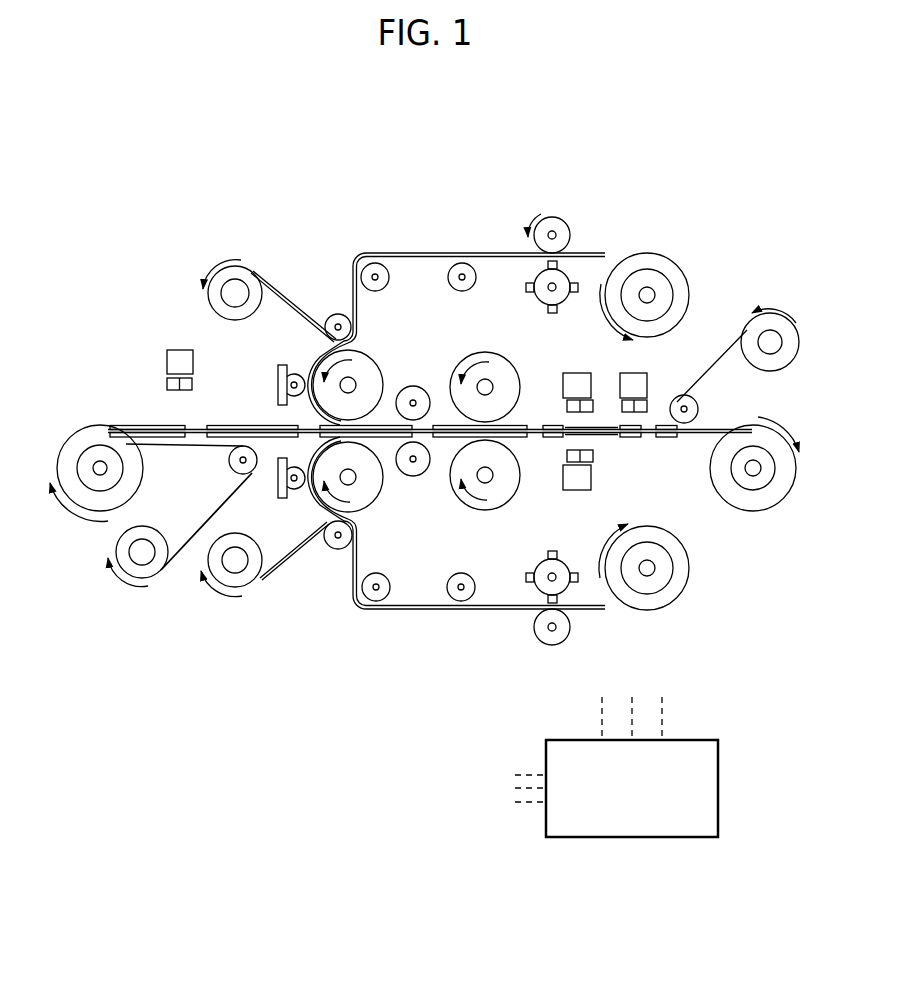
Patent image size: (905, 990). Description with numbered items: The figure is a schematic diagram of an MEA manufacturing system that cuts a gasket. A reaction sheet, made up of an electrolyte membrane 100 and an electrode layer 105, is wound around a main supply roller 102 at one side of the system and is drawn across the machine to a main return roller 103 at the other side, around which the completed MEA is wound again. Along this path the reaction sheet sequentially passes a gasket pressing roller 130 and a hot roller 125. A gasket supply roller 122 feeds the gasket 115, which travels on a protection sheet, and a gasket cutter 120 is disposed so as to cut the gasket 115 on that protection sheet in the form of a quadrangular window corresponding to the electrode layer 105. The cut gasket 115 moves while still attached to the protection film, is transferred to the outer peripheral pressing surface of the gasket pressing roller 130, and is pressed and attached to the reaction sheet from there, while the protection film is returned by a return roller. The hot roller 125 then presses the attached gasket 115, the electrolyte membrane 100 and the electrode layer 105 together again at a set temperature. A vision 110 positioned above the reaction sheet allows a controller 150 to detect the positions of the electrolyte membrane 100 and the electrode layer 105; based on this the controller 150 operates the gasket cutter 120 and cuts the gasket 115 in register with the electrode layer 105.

The electrolyte membrane 100 is at (196, 426).
The main supply roller 102 is at (70, 432).
The main return roller 103 is at (774, 512).
The electrode layer 105 is at (133, 426).
The vision 110 is at (175, 346).
The gasket 115 is at (362, 300).
The gasket cutter 120 is at (575, 272).
The gasket supply roller 122 is at (671, 256).
The hot roller 125 is at (518, 494).
The gasket pressing roller 130 is at (379, 504).
The controller 150 is at (718, 787).